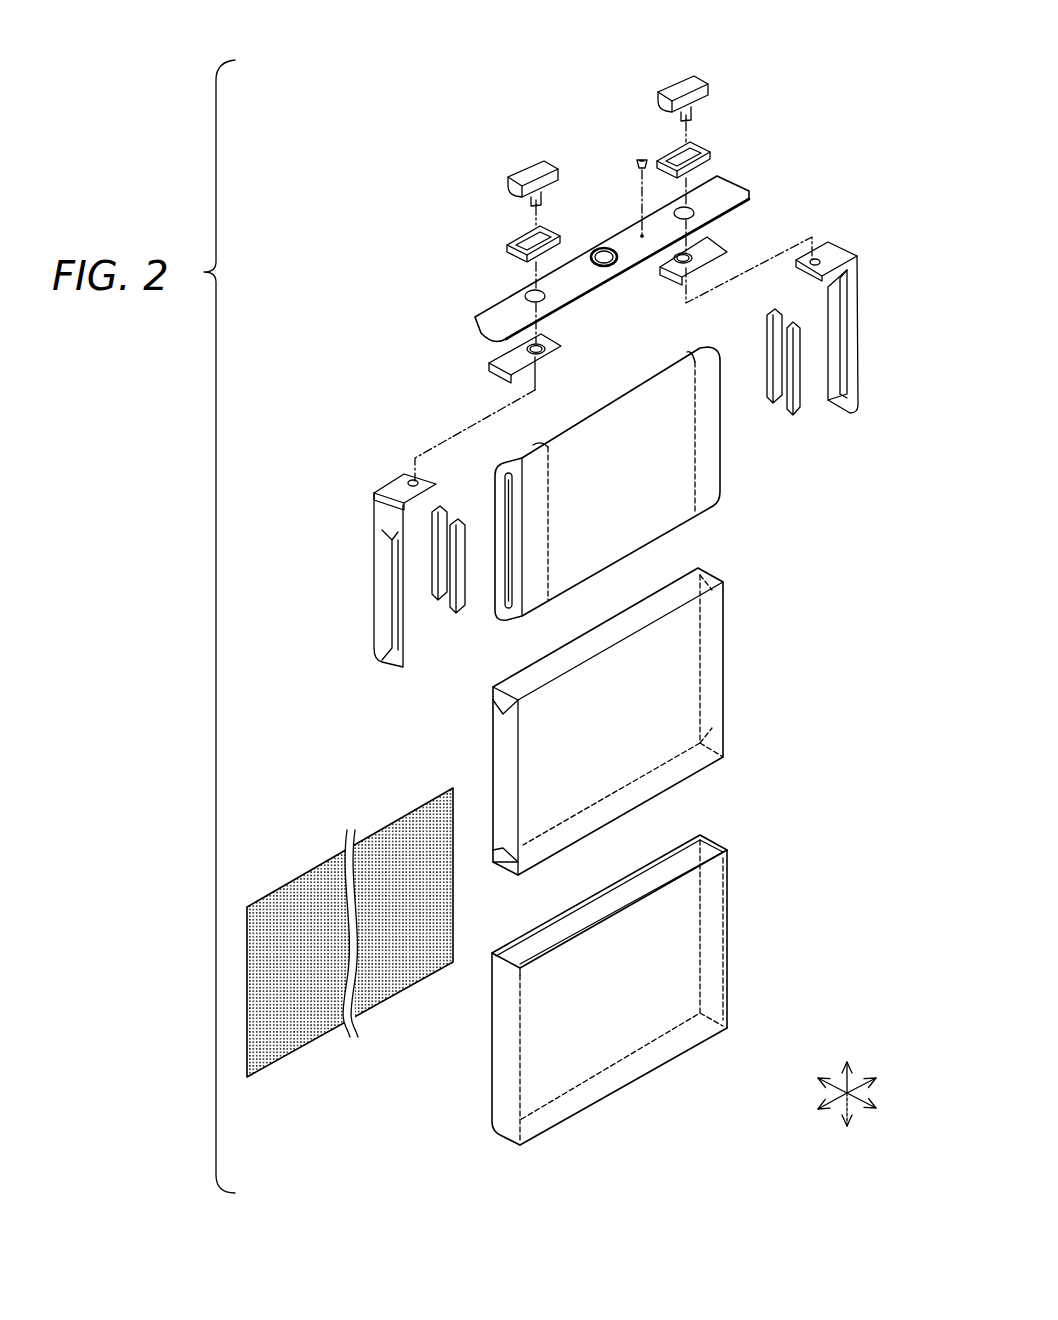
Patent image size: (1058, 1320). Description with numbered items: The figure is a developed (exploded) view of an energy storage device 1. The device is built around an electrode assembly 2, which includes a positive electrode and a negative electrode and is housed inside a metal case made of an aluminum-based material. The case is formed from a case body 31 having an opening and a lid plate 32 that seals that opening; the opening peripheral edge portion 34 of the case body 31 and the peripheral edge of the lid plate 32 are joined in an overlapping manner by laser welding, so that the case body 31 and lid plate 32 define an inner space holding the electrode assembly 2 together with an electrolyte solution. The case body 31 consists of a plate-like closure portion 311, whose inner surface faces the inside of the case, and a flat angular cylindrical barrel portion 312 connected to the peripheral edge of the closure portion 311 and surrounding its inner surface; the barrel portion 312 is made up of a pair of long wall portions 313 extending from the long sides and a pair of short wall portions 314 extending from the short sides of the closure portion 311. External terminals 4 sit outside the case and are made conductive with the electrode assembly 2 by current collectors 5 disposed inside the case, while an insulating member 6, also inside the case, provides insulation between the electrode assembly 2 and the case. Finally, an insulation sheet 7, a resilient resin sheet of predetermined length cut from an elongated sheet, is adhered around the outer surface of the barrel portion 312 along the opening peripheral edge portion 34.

The energy storage device 1 is at (396, 246).
The electrode assembly 2 is at (700, 526).
The external terminals 4 is at (515, 172).
The current collectors 5 is at (841, 416).
The insulating member 6 is at (728, 660).
The insulation sheet 7 is at (300, 897).
The case body 31 is at (618, 962).
The lid plate 32 is at (619, 275).
The opening peripheral edge portion 34 is at (713, 837).
The closure portion 311 is at (640, 1075).
The barrel portion 312 is at (736, 962).
The long wall portions 313 is at (540, 1073).
The short wall portions 314 is at (505, 1047).